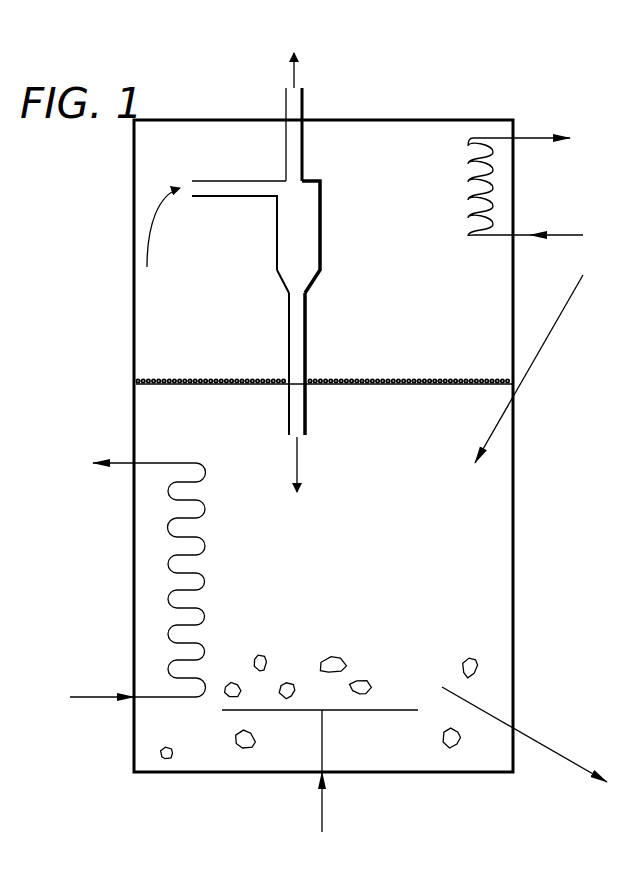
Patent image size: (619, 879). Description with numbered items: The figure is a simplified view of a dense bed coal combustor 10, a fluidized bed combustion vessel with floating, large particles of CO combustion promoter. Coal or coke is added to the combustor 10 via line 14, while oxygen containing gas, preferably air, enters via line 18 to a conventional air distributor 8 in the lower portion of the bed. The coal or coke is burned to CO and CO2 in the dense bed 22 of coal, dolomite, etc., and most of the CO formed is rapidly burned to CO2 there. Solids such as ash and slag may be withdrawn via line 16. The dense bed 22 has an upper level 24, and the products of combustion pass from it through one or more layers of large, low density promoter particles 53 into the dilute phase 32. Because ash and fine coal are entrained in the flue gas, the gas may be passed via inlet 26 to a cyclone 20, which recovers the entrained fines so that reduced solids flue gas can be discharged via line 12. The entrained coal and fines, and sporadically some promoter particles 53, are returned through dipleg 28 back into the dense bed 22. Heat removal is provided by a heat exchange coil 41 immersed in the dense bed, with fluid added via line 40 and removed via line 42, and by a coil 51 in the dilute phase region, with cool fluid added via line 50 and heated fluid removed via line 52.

The air distributor 8 is at (380, 710).
The dense bed coal combustor 10 is at (134, 548).
The line 12 is at (304, 112).
The line 14 is at (556, 320).
The line 16 is at (525, 730).
The line 18 is at (325, 800).
The cyclone 20 is at (322, 192).
The dense bed 22 is at (148, 662).
The upper level 24 is at (162, 379).
The inlet 26 is at (236, 180).
The dipleg 28 is at (307, 350).
The dilute phase 32 is at (152, 291).
The line 40 is at (118, 700).
The heat exchange coil 41 is at (205, 546).
The line 42 is at (125, 462).
The line 50 is at (562, 235).
The coil 51 is at (492, 206).
The line 52 is at (525, 138).
The promoter particles 53 is at (188, 378).